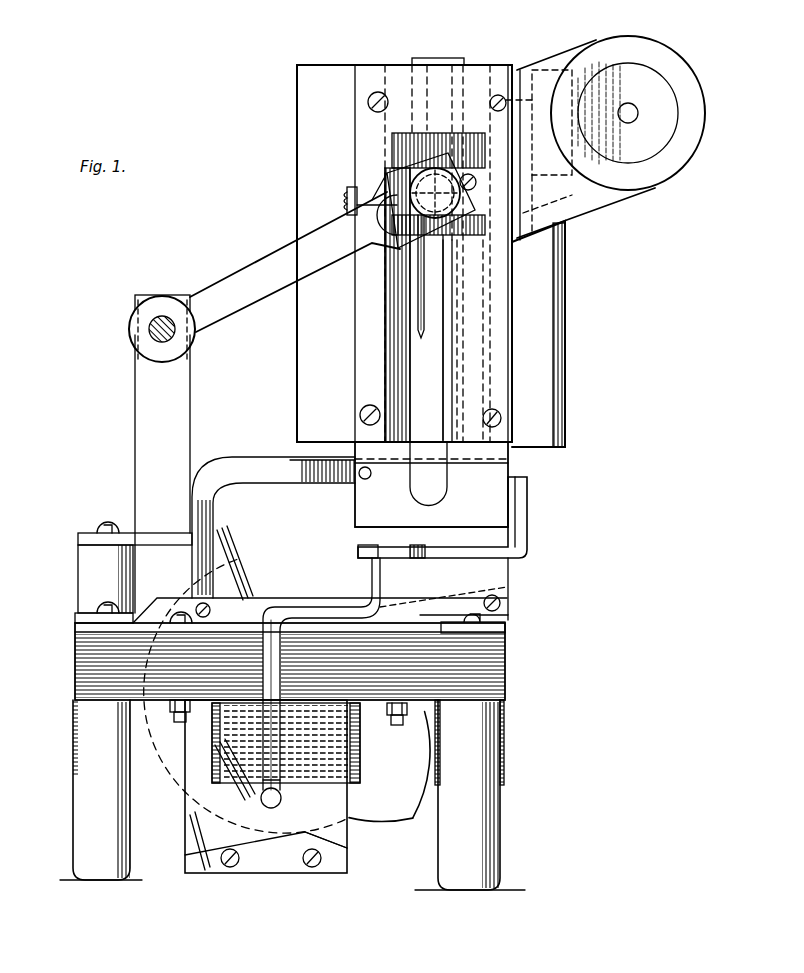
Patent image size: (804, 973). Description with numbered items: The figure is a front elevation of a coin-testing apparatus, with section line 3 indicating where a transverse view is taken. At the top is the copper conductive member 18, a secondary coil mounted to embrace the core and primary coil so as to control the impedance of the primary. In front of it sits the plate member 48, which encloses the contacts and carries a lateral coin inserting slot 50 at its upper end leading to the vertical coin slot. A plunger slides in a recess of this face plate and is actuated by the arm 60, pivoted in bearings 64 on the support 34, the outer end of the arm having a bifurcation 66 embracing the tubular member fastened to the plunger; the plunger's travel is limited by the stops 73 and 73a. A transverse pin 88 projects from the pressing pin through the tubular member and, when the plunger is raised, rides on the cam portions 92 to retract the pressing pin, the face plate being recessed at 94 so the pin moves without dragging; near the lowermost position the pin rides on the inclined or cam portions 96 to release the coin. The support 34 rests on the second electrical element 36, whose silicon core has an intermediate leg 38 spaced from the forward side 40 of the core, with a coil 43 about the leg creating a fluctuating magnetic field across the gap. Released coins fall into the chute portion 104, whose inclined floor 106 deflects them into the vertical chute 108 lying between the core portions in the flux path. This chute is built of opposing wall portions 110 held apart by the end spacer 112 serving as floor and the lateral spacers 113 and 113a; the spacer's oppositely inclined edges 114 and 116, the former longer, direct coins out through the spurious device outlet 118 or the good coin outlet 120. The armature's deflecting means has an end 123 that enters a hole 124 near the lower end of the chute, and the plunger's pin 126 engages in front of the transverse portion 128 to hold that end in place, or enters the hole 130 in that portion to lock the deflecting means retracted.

The section line 3- 3 is at (437, 62).
The conductive member 18 is at (553, 310).
The support 34 is at (78, 537).
The second electrical element 36 is at (492, 656).
The intermediate leg 38 is at (360, 752).
The forward side 40 is at (443, 684).
The coil 43 is at (395, 793).
The plate member 48 is at (502, 357).
The lateral coin inserting slot 50 is at (645, 62).
The arm 60 is at (248, 303).
The bearings 64 is at (150, 331).
The bifurcation 66 is at (395, 180).
The stop 73 is at (350, 189).
The stop 73a is at (368, 479).
The transverse pin 88 is at (462, 196).
The cam portions 92 is at (357, 207).
The recess 94 is at (468, 305).
The inclined or cam portions 96 is at (468, 470).
The chute portion 104 is at (506, 570).
The inclined floor 106 is at (432, 596).
The vertical chute 108 is at (205, 808).
The wall portions 110 is at (432, 396).
The end spacer 112 is at (276, 868).
The lateral spacer 113 is at (205, 712).
The lateral spacer 113a is at (395, 718).
The inclined edge 114 is at (226, 850).
The inclined edge 116 is at (345, 838).
The spurious device outlet 118 is at (186, 778).
The good coin outlet 120 is at (366, 812).
The end 123 is at (282, 793).
The hole 124 is at (281, 802).
The pin 126 is at (422, 283).
The transverse portion 128 is at (440, 548).
The hole 130 is at (420, 560).